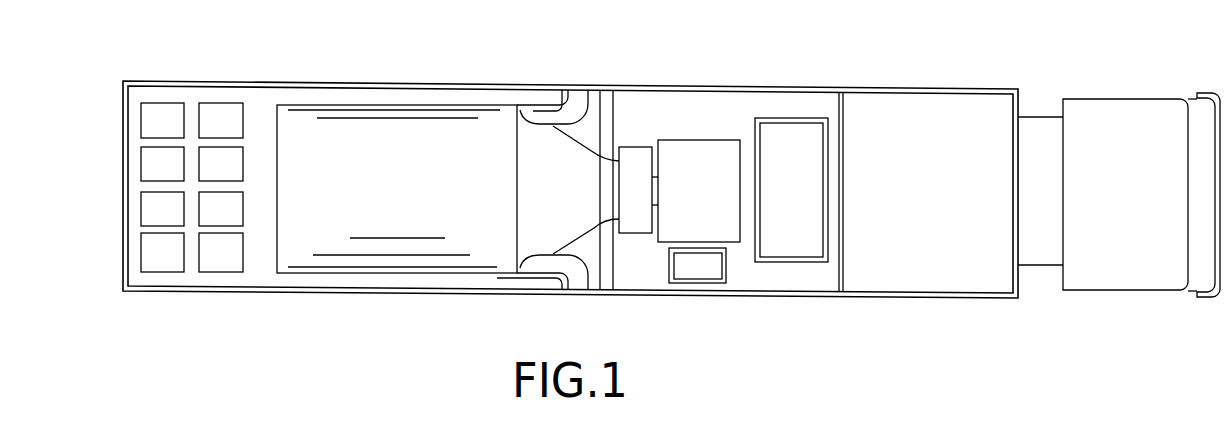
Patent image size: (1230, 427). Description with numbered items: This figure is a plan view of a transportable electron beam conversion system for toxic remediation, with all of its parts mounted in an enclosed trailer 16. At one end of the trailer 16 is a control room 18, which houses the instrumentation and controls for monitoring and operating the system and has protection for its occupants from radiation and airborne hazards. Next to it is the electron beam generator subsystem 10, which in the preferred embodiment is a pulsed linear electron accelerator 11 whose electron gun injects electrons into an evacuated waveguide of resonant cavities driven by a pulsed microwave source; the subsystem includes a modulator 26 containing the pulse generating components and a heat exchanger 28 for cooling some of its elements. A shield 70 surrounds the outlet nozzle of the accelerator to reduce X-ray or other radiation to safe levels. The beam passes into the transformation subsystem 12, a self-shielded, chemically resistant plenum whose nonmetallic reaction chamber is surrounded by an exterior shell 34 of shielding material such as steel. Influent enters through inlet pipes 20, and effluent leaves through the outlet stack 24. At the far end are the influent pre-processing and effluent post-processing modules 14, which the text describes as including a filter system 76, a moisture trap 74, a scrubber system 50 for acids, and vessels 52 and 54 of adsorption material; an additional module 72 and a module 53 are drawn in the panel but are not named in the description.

The electron beam generator subsystem 10 is at (835, 73).
The pulsed linear electron accelerator 11 is at (684, 178).
The transformation subsystem 12 is at (642, 73).
The influent pre-processing and effluent post-processing modules 14 is at (148, 73).
The enclosed trailer 16 is at (1018, 298).
The control room 18 is at (1012, 73).
The inlet pipes 20 is at (572, 297).
The outlet stack 24 is at (605, 297).
The modulator 26 is at (771, 192).
The heat exchanger 28 is at (681, 277).
The exterior shell 34 is at (379, 167).
The scrubber system 50 is at (146, 133).
The adsorption vessel 52 is at (146, 176).
The control button 53 is at (146, 220).
The adsorption vessel 54 is at (146, 263).
The shield 70 is at (205, 133).
The control button 72 is at (205, 176).
The moisture trap 74 is at (205, 220).
The filter system 76 is at (205, 263).